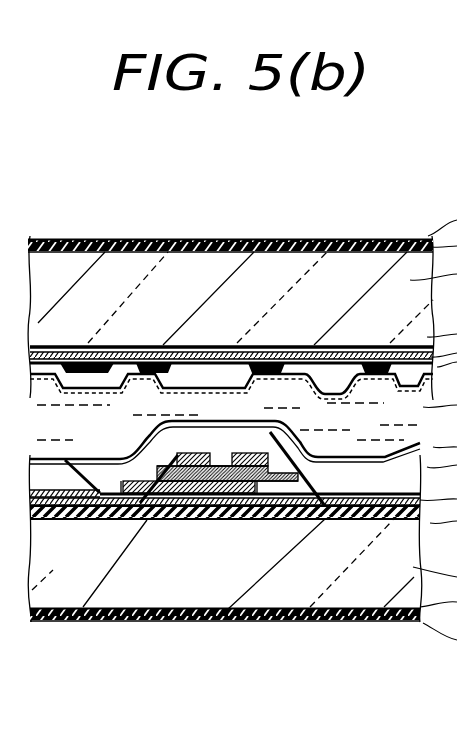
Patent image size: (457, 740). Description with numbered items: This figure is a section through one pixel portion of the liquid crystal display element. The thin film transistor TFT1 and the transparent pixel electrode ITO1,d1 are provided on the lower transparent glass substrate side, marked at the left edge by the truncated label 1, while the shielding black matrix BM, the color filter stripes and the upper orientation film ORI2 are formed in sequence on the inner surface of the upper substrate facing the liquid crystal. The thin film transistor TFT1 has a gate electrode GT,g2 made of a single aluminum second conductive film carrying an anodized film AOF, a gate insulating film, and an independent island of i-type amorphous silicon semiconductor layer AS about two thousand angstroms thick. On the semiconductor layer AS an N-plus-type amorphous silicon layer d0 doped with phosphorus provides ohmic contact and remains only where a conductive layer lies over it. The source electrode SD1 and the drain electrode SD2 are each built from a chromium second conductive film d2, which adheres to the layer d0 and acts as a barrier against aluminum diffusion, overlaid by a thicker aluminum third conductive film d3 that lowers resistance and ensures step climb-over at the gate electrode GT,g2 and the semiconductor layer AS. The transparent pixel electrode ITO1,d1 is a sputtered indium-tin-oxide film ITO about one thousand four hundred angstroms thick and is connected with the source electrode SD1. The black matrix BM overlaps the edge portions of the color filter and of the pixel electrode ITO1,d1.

The indium-tin-oxide transparent conductive film ITO is at (29, 239).
The black matrix BM is at (149, 345).
The upper orientation film ORI2 is at (315, 393).
The thin film transistor TFT1 is at (178, 434).
The N+-type amorphous silicon semiconductor layer d0 is at (225, 466).
The lower transparent glass substrate 1 is at (30, 498).
The drain electrode SD2 is at (105, 509).
The source electrode SD1 is at (328, 497).
The third conductive film d3 is at (145, 508).
The second conductive film d2 is at (208, 520).
The i-type semiconductor layer AS is at (188, 497).
The gate electrode GT,g2 is at (152, 500).
The anodized film AOF is at (253, 505).
The transparent pixel electrode ITO1,d1 is at (388, 506).